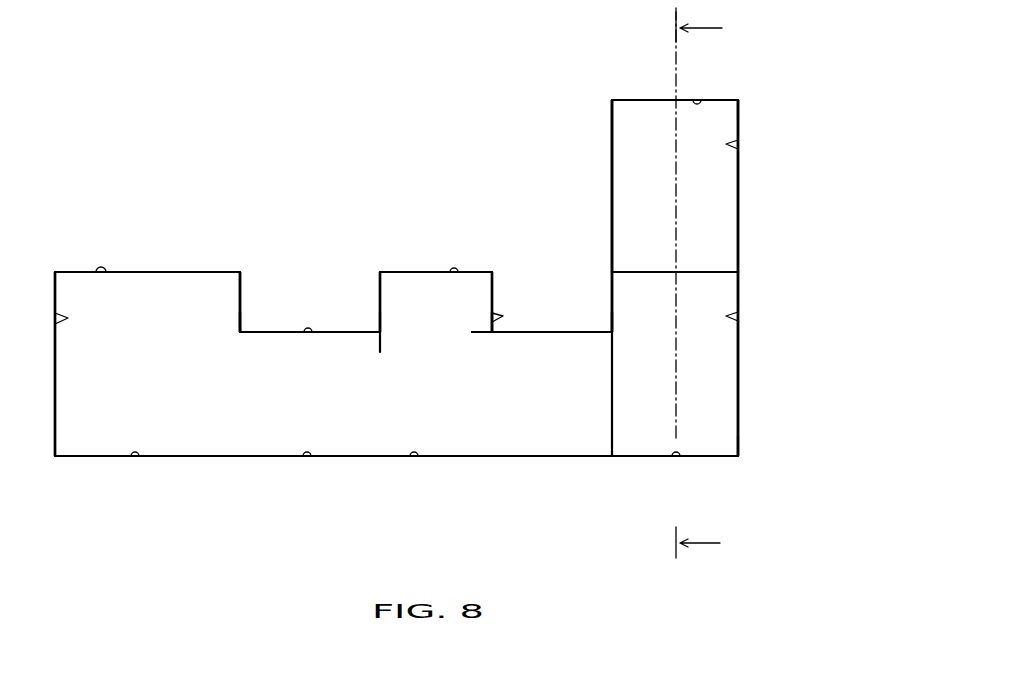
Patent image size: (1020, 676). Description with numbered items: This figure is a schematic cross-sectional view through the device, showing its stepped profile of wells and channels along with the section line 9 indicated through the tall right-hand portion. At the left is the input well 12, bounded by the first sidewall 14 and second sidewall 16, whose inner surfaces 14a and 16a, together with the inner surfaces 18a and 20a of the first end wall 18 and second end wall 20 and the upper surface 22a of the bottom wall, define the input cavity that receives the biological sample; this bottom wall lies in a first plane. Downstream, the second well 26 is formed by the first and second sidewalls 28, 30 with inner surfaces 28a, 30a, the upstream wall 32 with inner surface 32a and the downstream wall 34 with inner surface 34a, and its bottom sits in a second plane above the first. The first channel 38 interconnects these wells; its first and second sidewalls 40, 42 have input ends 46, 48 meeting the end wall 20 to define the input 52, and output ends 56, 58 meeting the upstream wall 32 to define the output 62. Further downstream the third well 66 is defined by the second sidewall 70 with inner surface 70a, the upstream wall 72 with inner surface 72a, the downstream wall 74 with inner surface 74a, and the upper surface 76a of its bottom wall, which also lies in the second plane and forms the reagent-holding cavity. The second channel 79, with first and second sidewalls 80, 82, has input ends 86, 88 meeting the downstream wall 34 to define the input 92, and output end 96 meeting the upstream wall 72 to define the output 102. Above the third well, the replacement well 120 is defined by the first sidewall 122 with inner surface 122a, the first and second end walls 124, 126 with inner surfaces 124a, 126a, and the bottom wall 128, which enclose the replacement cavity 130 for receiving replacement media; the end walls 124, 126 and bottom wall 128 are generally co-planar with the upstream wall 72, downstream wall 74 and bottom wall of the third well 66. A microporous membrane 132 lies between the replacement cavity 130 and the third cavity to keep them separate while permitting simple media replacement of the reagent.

The section line 9- 9 is at (707, 285).
The input well 12 is at (171, 262).
The first sidewall 14 is at (108, 272).
The inner surface of first sidewall 14a is at (148, 274).
The second sidewall 16 is at (136, 460).
The inner surface of second sidewall 16a is at (97, 456).
The first end wall 18 is at (55, 362).
The inner surface of first end wall 18a is at (55, 316).
The second end wall 20 is at (240, 306).
The inner surface of second end wall 20a is at (240, 292).
The upper surface of bottom wall 22a is at (147, 329).
The second well 26 is at (462, 469).
The first sidewall 28 is at (437, 272).
The inner surface of first sidewall 28a is at (456, 272).
The second sidewall 30 is at (382, 458).
The inner surface of second sidewall 30a is at (414, 460).
The upstream wall 32 is at (380, 306).
The inner surface of upstream wall 32a is at (381, 290).
The downstream wall 34 is at (492, 306).
The inner surface of downstream wall 34a is at (496, 316).
The first channel 38 is at (288, 322).
The first sidewall of first channel 40 is at (311, 332).
The second sidewall of first channel 42 is at (308, 460).
The input end of first sidewall 46 is at (232, 345).
The input end of second sidewall 48 is at (239, 470).
The input of first channel 52 is at (240, 334).
The output end of first sidewall 56 is at (372, 345).
The output end of second sidewall 58 is at (380, 440).
The output of first channel 62 is at (380, 334).
The third well 66 is at (745, 468).
The second sidewall 70 is at (647, 458).
The inner surface of second sidewall 70a is at (680, 460).
The upstream wall 72 is at (612, 303).
The inner surface of upstream wall 72a is at (612, 290).
The downstream wall 74 is at (738, 362).
The inner surface of downstream wall 74a is at (738, 314).
The upper surface of bottom wall 76a is at (675, 364).
The second channel 79 is at (543, 470).
The first sidewall of second channel 80 is at (550, 332).
The second sidewall of second channel 82 is at (568, 458).
The input end of first sidewall 86 is at (484, 345).
The input end of second sidewall 88 is at (498, 470).
The input of second channel 92 is at (492, 334).
The output end of first sidewall 96 is at (604, 343).
The output of second channel 102 is at (612, 334).
The replacement well 120 is at (750, 97).
The first sidewall 122 is at (662, 100).
The inner surface of first sidewall 122a is at (700, 100).
The first end wall 124 is at (612, 138).
The inner surface of first end wall 124a is at (613, 100).
The second end wall 126 is at (738, 192).
The inner surface of second end wall 126a is at (738, 142).
The bottom wall 128 is at (675, 186).
The replacement cavity 130 is at (625, 172).
The microporous membrane 132 is at (718, 272).